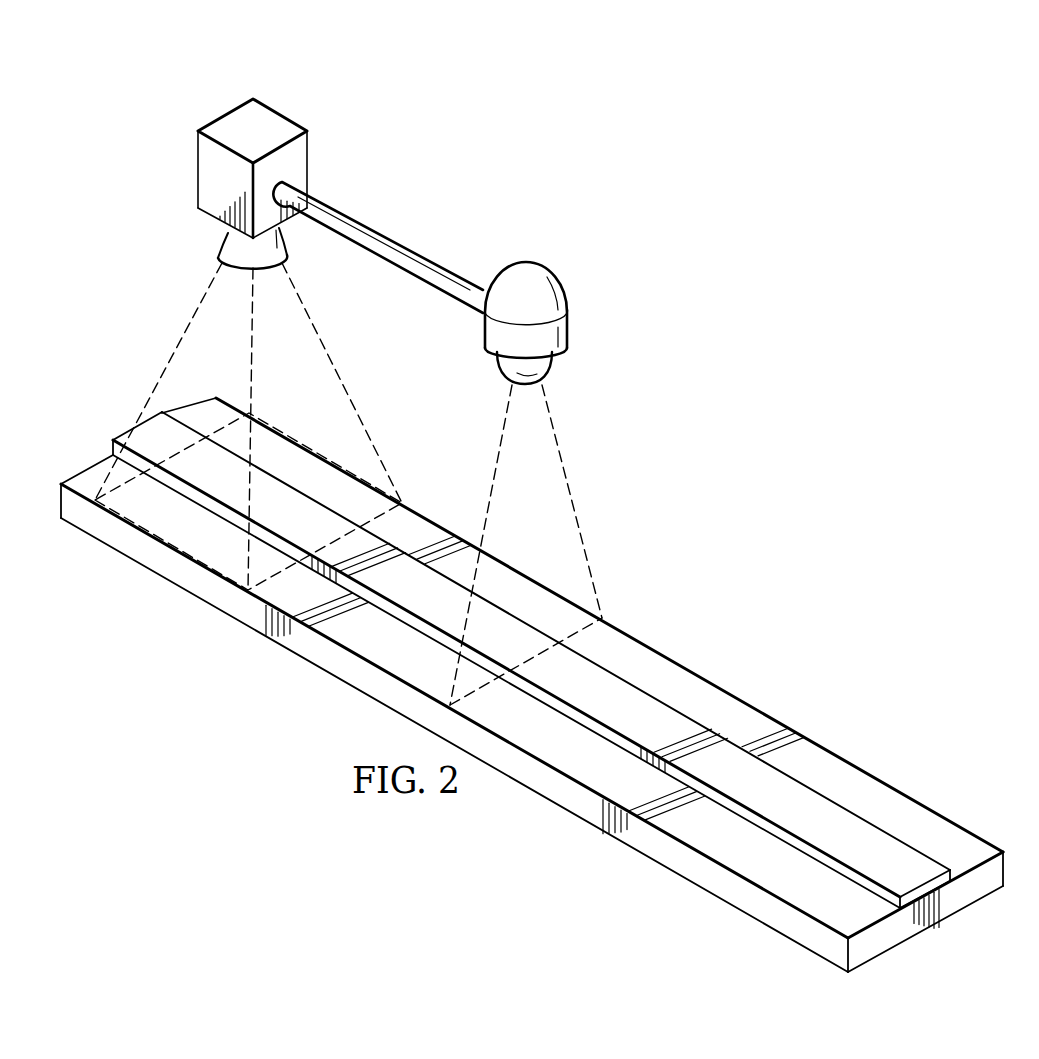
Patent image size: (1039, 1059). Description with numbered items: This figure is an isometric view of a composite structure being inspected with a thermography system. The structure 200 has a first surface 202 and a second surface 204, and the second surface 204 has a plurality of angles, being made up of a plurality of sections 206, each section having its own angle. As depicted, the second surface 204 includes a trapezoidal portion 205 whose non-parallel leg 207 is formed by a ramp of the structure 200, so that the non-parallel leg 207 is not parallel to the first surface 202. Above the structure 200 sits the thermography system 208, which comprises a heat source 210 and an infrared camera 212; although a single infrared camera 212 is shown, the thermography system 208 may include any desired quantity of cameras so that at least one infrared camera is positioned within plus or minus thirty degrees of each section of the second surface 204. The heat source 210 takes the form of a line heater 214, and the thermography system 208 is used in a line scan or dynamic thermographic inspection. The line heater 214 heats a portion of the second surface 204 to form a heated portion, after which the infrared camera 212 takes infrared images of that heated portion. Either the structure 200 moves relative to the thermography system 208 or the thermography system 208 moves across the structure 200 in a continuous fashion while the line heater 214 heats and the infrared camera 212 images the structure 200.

The structure 200 is at (715, 682).
The first surface 202 is at (944, 925).
The second surface 204 is at (556, 741).
The trapezoidal portion 205 is at (815, 812).
The plurality of sections 206 is at (962, 809).
The non-parallel leg 207 is at (737, 821).
The thermography system 208 is at (514, 127).
The heat source 210 is at (564, 269).
The infrared camera 212 is at (215, 108).
The line heater 214 is at (507, 232).